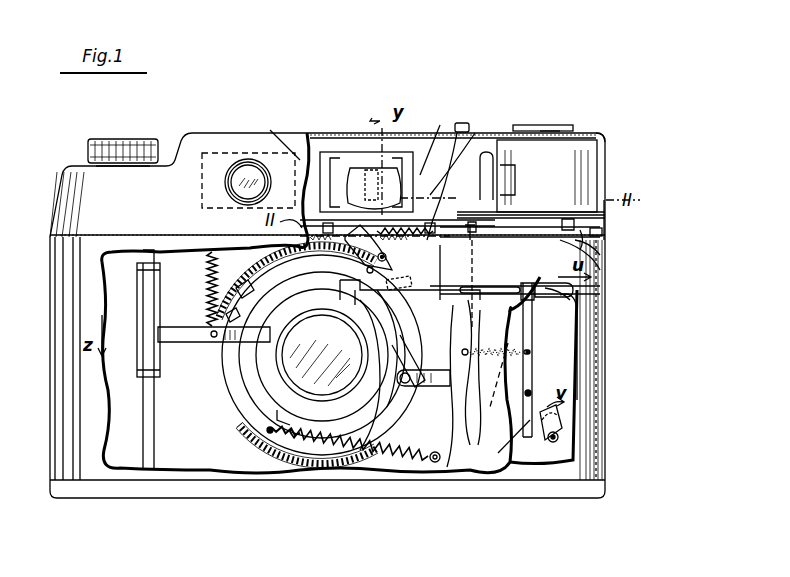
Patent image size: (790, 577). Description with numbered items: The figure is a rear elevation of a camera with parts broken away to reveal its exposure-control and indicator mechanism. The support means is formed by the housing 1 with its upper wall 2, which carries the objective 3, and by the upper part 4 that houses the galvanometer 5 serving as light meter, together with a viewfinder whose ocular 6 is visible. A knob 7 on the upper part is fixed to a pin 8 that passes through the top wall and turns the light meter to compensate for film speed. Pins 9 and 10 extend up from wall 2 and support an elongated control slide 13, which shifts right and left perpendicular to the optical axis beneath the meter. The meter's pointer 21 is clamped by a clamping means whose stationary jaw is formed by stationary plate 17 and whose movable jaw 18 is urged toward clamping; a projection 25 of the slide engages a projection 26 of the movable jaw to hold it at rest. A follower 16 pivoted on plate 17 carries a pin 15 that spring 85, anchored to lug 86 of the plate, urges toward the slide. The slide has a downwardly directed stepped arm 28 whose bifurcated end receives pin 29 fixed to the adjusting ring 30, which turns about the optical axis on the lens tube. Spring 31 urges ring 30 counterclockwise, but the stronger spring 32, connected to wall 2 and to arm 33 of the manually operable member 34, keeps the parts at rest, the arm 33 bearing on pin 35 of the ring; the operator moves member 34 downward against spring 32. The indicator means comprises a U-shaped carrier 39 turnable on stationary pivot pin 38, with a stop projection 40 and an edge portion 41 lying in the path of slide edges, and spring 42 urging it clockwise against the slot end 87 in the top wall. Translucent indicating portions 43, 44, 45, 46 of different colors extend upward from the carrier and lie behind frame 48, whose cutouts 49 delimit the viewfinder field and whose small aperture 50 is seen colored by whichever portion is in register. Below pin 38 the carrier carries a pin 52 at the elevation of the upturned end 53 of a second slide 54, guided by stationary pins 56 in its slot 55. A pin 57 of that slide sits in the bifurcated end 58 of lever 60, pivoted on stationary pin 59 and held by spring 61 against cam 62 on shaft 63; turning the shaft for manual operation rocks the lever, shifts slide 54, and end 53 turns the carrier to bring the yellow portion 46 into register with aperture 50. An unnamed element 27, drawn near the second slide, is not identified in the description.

The housing 1 is at (594, 390).
The upper wall 2 is at (604, 275).
The objective 3 is at (290, 392).
The upper part 4 is at (580, 150).
The galvanometer 5 is at (600, 137).
The ocular 6 is at (240, 170).
The knob 7 is at (568, 130).
The pin 8 is at (548, 125).
The pin 9 is at (268, 248).
The pin 10 is at (510, 167).
The control slide 13 is at (515, 272).
The pin 15 is at (602, 262).
The follower 16 is at (606, 205).
The stationary plate 17 is at (500, 212).
The movable jaw 18 is at (545, 218).
The pointer 21 is at (493, 170).
The projection 25 is at (478, 235).
The projection 26 is at (578, 235).
The actuating lever 27 is at (476, 377).
The stepped arm 28 is at (387, 385).
The pin 29 is at (350, 300).
The adjusting ring 30 is at (262, 430).
The spring 31 is at (398, 455).
The spring 32 is at (207, 292).
The arm 33 is at (218, 344).
The manually operable member 34 is at (138, 290).
The pin 35 is at (215, 340).
The stationary pivot pin 38 is at (322, 355).
The carrier 39 is at (450, 200).
The projection 40 is at (252, 290).
The edge portion 41 is at (375, 249).
The spring 42 is at (414, 236).
The indicating portion 43 is at (335, 175).
The indicating portion 44 is at (368, 168).
The indicating portion 45 is at (380, 172).
The indicating portion 46 is at (430, 190).
The frame 48 is at (306, 138).
The cutouts 49 is at (290, 150).
The aperture 50 is at (411, 151).
The pin 52 is at (390, 292).
The upwardly directed end 53 is at (435, 383).
The second elongated slide 54 is at (575, 300).
The elongated slot 55 is at (533, 334).
The stationary pins 56 is at (487, 386).
The pin 57 is at (558, 297).
The bifurcated end 58 is at (585, 305).
The stationary pivot pin 59 is at (530, 392).
The lever 60 is at (506, 449).
The spring 61 is at (494, 386).
The cam 62 is at (560, 422).
The shaft 63 is at (553, 443).
The spring 85 is at (602, 245).
The lug 86 is at (607, 225).
The slot end 87 is at (320, 320).